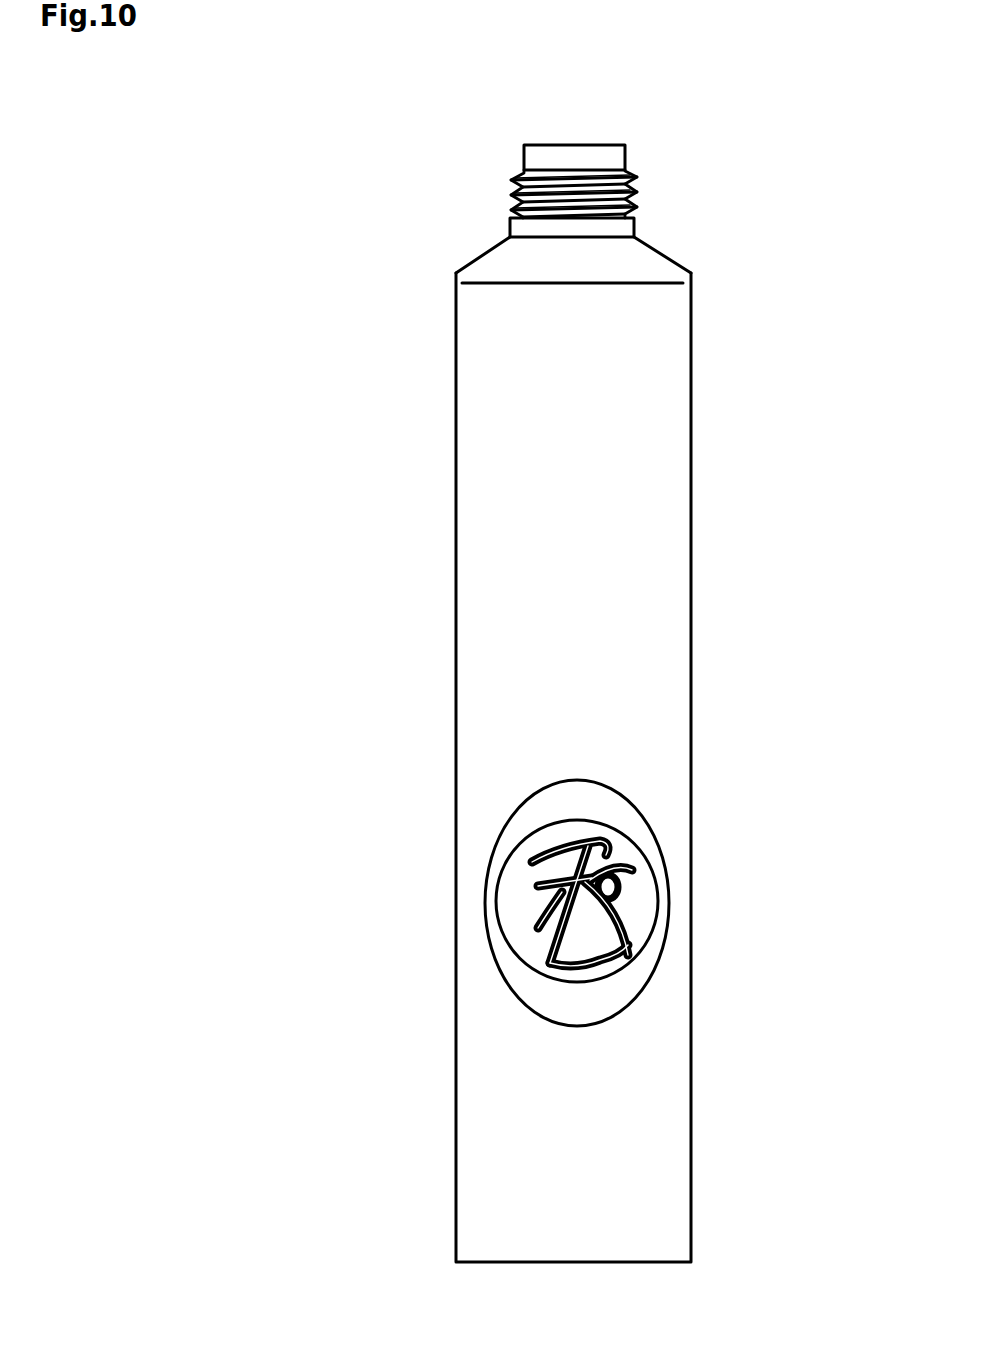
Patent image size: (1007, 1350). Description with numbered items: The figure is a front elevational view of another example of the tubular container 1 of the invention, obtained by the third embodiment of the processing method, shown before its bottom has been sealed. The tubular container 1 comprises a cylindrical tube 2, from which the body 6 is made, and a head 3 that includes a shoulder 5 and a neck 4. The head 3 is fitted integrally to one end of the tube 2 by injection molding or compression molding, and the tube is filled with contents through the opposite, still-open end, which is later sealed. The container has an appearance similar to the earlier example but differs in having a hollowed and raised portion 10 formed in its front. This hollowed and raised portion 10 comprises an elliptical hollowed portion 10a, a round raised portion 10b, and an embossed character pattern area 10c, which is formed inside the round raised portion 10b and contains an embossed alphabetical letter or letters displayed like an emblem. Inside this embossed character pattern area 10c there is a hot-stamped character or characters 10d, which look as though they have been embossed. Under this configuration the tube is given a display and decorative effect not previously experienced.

The tubular container 1 is at (737, 270).
The cylindrical tube 2 is at (573, 767).
The head 3 is at (343, 105).
The neck 4 is at (542, 158).
The shoulder 5 is at (510, 254).
The body 6 is at (653, 573).
The hollowed and raised portion 10 is at (667, 810).
The elliptical hollowed portion 10a is at (543, 812).
The round raised portion 10b is at (637, 905).
The embossed character pattern area 10c is at (550, 890).
The hot-stamped character 10d is at (580, 957).